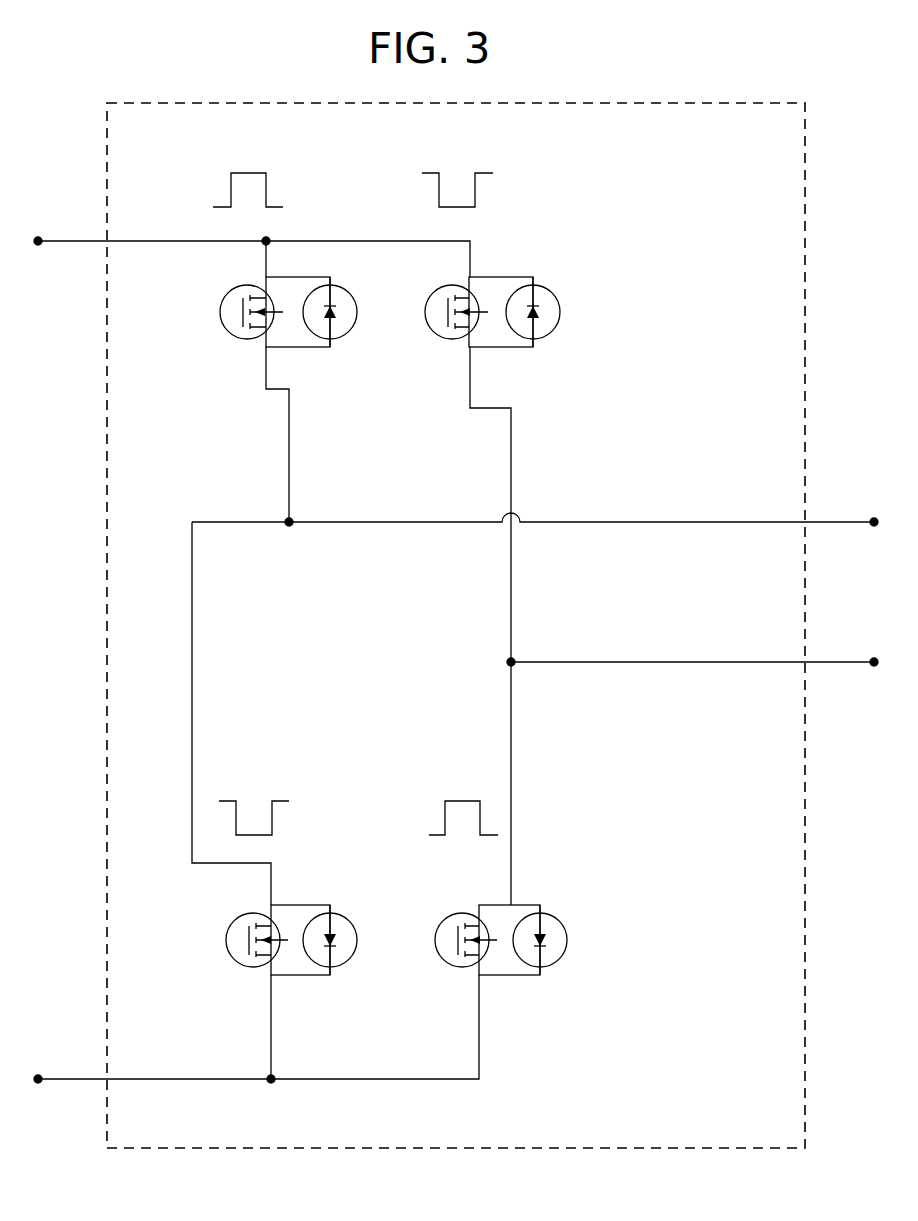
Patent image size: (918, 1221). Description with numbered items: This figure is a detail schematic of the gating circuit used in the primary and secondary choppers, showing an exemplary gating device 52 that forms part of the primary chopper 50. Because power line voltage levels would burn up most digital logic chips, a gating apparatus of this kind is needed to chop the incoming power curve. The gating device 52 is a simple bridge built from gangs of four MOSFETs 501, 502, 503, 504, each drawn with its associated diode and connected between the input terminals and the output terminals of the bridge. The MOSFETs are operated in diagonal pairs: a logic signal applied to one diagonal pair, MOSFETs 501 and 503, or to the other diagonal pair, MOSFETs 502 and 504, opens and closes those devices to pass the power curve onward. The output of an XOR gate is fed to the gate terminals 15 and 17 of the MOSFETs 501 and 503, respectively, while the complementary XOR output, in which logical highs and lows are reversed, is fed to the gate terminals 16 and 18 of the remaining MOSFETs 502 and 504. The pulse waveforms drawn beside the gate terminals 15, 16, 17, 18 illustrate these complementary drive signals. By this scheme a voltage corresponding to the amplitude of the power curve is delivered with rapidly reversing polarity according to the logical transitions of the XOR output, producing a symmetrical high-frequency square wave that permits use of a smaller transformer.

The primary chopper 50 is at (770, 148).
The gating device 52 is at (623, 225).
The gate terminal 15 is at (266, 313).
The gate terminal 16 is at (472, 313).
The gate terminal 17 is at (478, 940).
The gate terminal 18 is at (269, 940).
The MOSFET 501 is at (241, 318).
The MOSFET 502 is at (447, 318).
The MOSFET 503 is at (456, 946).
The MOSFET 504 is at (247, 946).